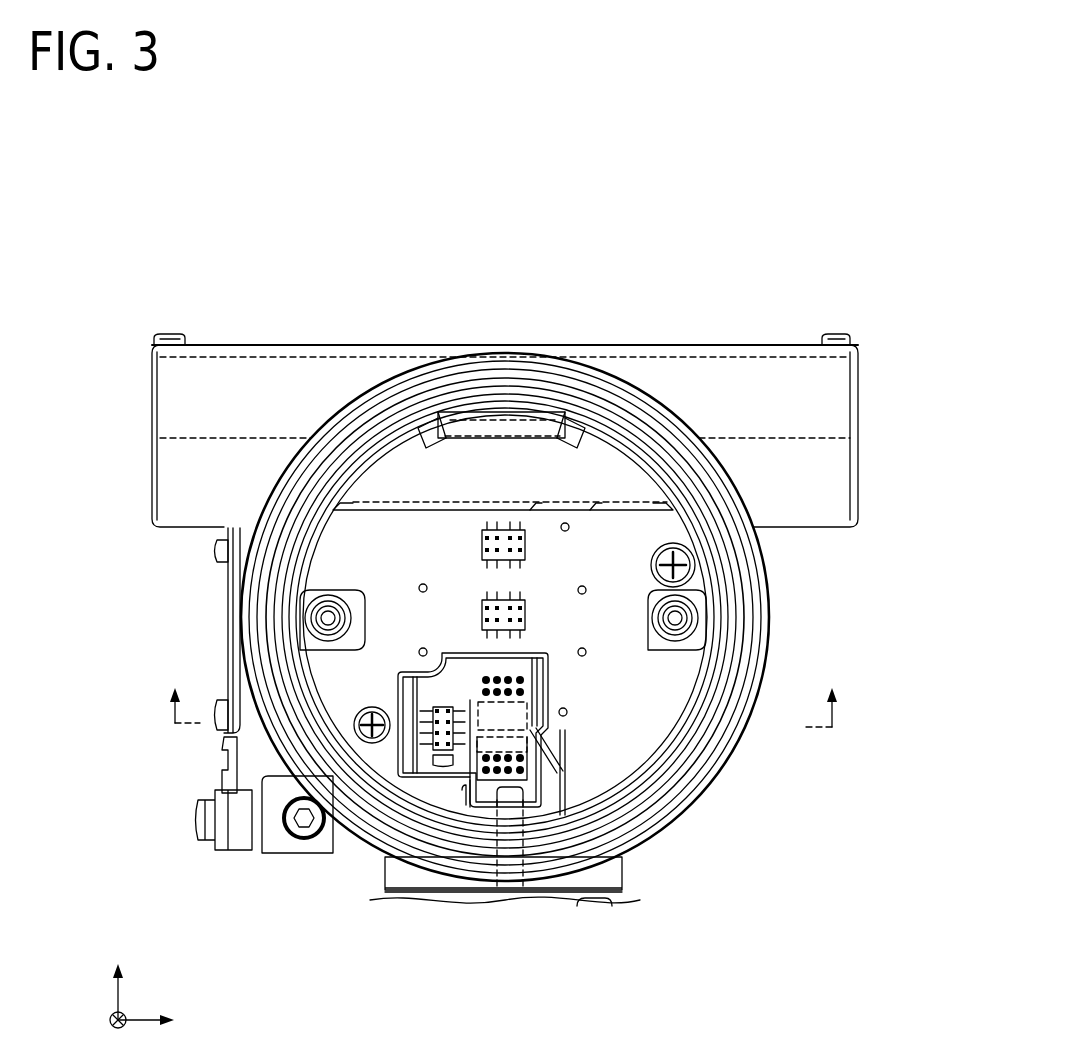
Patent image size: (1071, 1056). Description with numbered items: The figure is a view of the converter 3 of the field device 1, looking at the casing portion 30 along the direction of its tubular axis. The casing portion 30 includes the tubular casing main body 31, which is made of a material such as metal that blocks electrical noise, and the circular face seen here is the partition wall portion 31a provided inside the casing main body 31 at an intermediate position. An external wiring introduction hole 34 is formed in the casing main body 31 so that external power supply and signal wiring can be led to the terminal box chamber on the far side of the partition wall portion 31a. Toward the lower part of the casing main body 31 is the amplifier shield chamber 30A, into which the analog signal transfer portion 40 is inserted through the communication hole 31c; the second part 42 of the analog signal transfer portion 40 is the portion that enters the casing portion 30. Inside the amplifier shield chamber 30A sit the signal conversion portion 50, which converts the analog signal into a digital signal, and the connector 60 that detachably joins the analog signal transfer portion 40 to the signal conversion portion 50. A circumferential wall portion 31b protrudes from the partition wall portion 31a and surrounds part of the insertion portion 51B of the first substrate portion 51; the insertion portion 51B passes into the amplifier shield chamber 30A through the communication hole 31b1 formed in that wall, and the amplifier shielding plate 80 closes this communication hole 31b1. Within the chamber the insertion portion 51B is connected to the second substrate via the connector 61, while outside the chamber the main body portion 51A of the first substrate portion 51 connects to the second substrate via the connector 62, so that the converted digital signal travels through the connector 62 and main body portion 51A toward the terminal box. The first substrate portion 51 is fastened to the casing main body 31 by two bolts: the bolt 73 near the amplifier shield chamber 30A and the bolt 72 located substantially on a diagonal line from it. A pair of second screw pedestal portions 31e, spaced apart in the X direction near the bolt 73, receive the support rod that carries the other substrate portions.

The field device 1 is at (162, 238).
The converter 3 is at (287, 339).
The casing portion 30 is at (475, 332).
The amplifier shield chamber 30A is at (447, 781).
The casing main body 31 is at (560, 368).
The partition wall portion 31a is at (473, 805).
The circumferential wall portion 31b is at (555, 661).
The communication hole 31b1 is at (450, 742).
The communication hole 31c is at (500, 808).
The second screw pedestal portions 31e is at (326, 618).
The external wiring introduction hole 34 is at (858, 408).
The analog signal transfer portion 40 is at (545, 800).
The second part 42 is at (575, 783).
The signal conversion portion 50 is at (548, 718).
The first substrate portion 51 is at (120, 660).
The main body portion 51A is at (380, 568).
The insertion portion 51B is at (440, 660).
The connector 60 is at (548, 745).
The connector 61 is at (437, 755).
The connector 62 is at (487, 602).
The bolt 72 is at (680, 568).
The bolt 73 is at (357, 712).
The amplifier shielding plate 80 is at (430, 728).